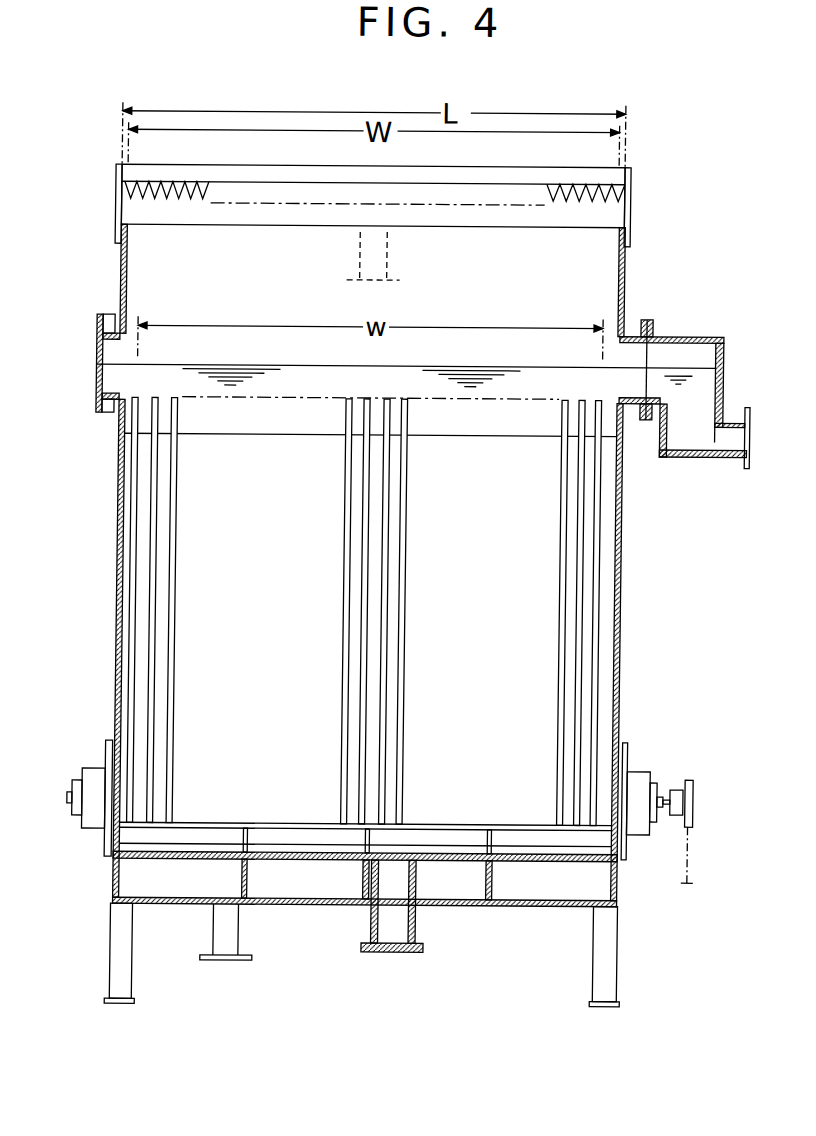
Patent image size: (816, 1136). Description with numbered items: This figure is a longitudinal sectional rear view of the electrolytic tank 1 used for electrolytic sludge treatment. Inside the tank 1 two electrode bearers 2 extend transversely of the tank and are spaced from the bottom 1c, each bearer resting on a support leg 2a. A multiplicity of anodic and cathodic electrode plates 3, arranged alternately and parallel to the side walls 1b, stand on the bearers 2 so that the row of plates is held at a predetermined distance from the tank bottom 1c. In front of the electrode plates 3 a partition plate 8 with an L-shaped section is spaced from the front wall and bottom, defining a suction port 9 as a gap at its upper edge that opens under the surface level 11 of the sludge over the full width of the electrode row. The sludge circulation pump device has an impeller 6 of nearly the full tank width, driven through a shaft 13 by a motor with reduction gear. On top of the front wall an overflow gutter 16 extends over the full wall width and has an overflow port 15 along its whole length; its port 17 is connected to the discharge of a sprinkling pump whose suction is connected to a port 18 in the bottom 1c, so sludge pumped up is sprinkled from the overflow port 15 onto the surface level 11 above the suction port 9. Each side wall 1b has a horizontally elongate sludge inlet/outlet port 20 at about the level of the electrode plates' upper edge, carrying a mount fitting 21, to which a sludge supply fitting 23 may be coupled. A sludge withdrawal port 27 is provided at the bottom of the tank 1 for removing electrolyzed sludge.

The electrolytic tank 1 is at (409, 524).
The side wall 1b is at (117, 605).
The bottom 1c is at (527, 843).
The electrode bearer 2 is at (268, 826).
The support leg 2a is at (232, 843).
The electrode plates 3 is at (137, 615).
The impeller 6 is at (300, 840).
The partition plate 8 is at (521, 522).
The suction port 9 is at (216, 431).
The surface level 11 is at (253, 362).
The shaft 13 is at (663, 790).
The overflow port 15 is at (575, 205).
The overflow gutter 16 is at (605, 177).
The port 17 is at (354, 258).
The port 18 is at (230, 927).
The sludge inlet/outlet port 20 is at (109, 368).
The mount fitting 21 is at (105, 382).
The sludge supply fitting 23 is at (720, 340).
The sludge withdrawal port 27 is at (397, 920).